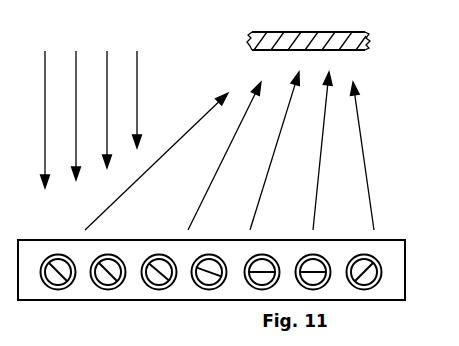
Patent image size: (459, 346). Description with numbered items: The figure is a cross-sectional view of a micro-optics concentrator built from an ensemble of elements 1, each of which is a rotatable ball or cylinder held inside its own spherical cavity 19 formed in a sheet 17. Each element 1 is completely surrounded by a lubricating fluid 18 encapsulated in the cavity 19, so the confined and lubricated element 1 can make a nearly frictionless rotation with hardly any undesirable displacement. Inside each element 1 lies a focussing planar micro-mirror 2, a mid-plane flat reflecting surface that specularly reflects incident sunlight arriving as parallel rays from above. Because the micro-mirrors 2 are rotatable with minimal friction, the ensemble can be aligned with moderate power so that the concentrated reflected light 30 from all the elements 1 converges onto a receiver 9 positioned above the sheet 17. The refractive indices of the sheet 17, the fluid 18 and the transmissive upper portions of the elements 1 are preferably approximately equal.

The element 1 is at (211, 270).
The focussing planar micro-mirror 2 is at (59, 263).
The receiver 9 is at (291, 36).
The sheet 17 is at (80, 290).
The lubricating fluid 18 is at (155, 283).
The concentric cavity 19 is at (108, 254).
The reflected light ray 30 is at (76, 67).